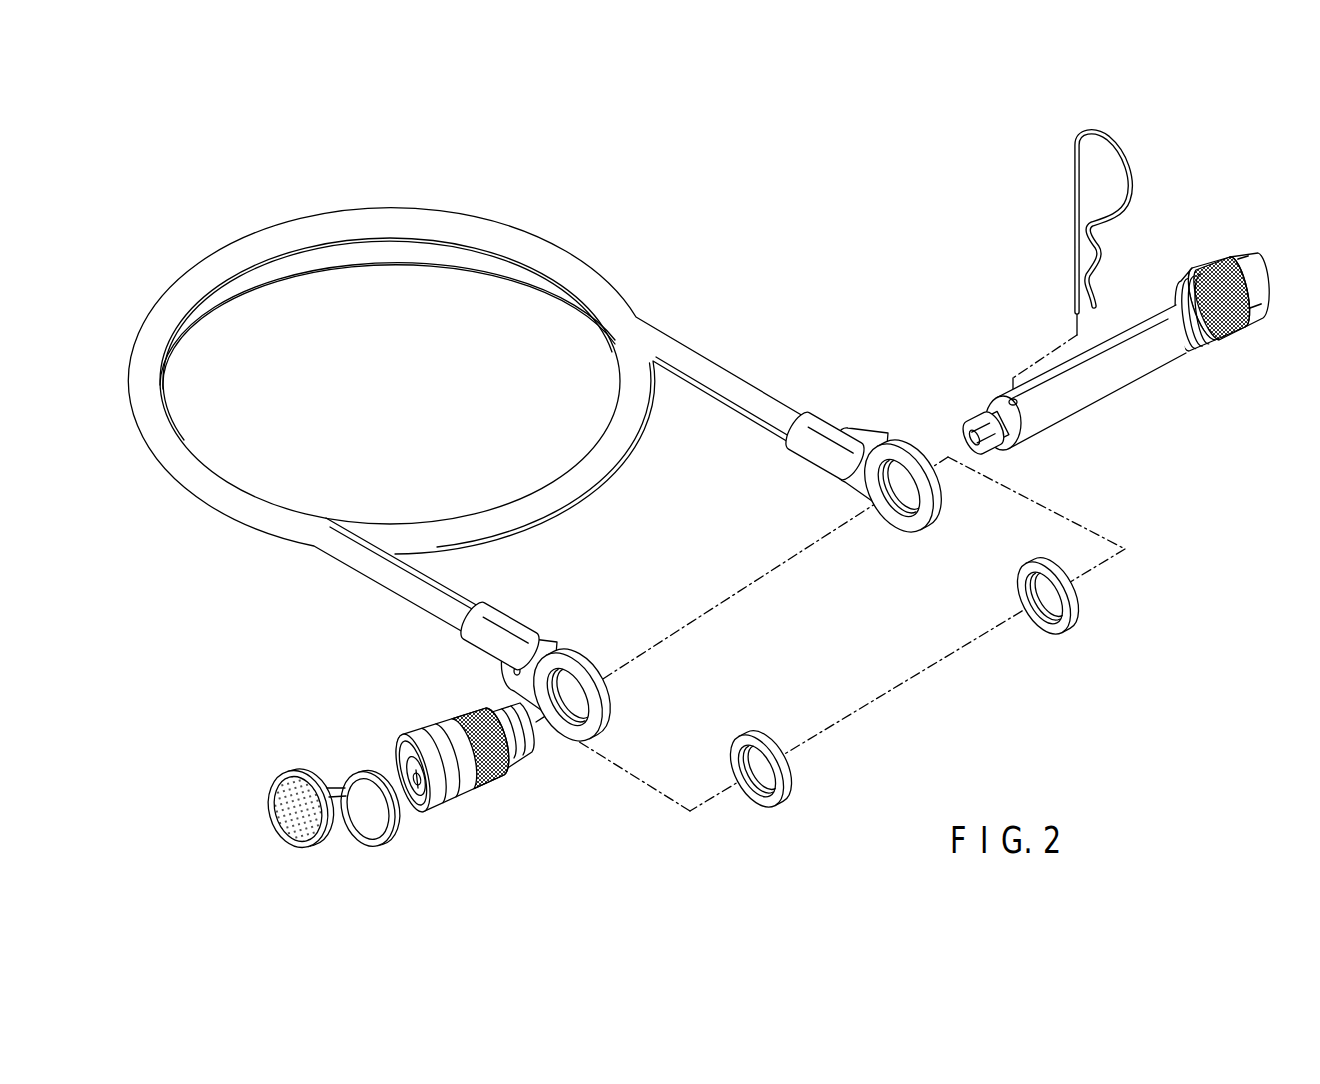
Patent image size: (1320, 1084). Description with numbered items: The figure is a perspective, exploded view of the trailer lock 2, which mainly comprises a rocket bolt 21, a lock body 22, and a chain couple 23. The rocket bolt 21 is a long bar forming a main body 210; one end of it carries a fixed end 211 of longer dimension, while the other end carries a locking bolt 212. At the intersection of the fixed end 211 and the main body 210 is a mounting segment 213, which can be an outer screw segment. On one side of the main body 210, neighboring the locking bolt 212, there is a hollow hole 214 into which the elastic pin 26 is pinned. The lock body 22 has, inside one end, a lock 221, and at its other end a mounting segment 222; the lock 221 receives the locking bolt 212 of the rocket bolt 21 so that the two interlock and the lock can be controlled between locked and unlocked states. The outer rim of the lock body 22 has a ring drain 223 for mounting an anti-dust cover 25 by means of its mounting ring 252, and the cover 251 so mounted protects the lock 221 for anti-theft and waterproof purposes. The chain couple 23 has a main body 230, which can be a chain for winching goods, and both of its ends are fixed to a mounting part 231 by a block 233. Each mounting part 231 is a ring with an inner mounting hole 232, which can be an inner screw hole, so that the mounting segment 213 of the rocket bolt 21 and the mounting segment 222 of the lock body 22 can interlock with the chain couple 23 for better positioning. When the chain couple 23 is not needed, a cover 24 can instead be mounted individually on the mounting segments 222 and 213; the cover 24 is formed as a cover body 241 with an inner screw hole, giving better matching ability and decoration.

The trailer lock 2 is at (843, 290).
The rocket bolt 21 is at (1129, 330).
The main body 210 is at (1085, 377).
The fixed end 211 is at (1228, 296).
The locking bolt 212 is at (984, 432).
The mounting segment 213 is at (1195, 309).
The hollow hole 214 is at (1013, 402).
The lock body 22 is at (443, 750).
The lock 221 is at (413, 773).
The mounting segment 222 is at (513, 736).
The ring drain 223 is at (480, 748).
The chain couple 23 is at (563, 456).
The main body 230 is at (277, 243).
The mounting part 231 is at (750, 620).
The mounting hole 232 is at (893, 500).
The block 233 is at (830, 430).
The cover 24 is at (936, 713).
The cover body 241 is at (1036, 622).
The anti-dust cover 25 is at (317, 786).
The cover 251 is at (288, 780).
The mounting ring 252 is at (373, 832).
The elastic pin 26 is at (1074, 182).